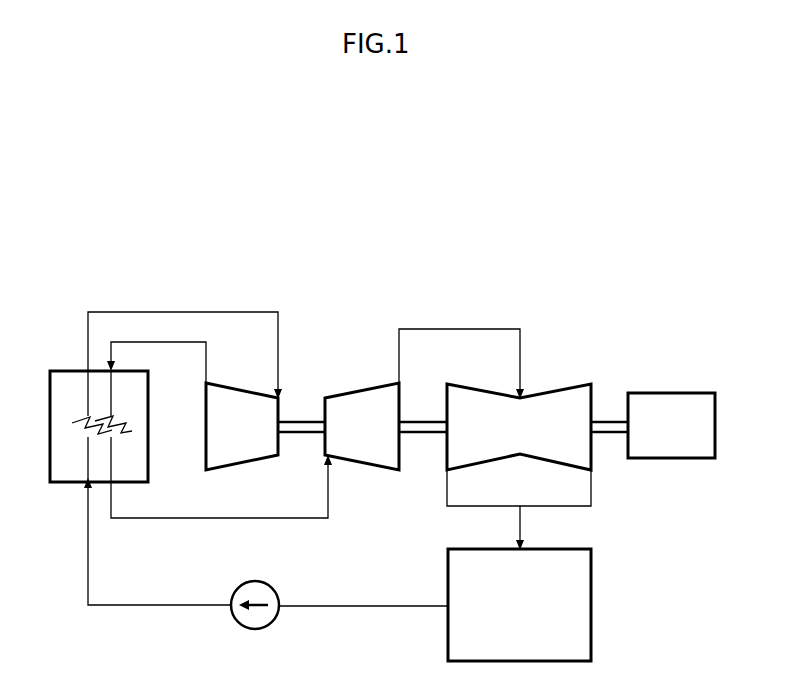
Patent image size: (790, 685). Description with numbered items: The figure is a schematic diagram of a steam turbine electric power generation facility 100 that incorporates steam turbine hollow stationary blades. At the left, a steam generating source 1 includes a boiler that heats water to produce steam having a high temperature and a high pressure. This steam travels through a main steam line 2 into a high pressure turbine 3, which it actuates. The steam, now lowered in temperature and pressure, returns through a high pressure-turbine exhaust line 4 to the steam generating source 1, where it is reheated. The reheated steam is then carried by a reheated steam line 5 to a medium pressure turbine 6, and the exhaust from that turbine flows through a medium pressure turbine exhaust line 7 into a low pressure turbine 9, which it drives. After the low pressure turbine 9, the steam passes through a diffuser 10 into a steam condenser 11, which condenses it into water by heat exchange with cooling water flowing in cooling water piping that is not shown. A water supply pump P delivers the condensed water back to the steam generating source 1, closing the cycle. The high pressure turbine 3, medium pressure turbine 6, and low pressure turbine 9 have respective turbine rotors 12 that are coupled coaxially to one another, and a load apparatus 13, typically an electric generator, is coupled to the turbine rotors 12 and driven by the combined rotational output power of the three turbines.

The steam turbine electric power generation facility 100 is at (377, 268).
The steam generating source 1 is at (50, 430).
The main steam line 2 is at (192, 312).
The high pressure turbine 3 is at (248, 390).
The high pressure-turbine exhaust line 4 is at (163, 344).
The reheated steam line 5 is at (210, 518).
The medium pressure turbine 6 is at (361, 390).
The medium pressure turbine exhaust line 7 is at (453, 329).
The low pressure turbine 9 is at (551, 391).
The diffuser 10 is at (470, 506).
The steam condenser 11 is at (591, 606).
The turbine rotors 12 is at (301, 432).
The load apparatus 13 is at (677, 393).
The water supply pump P is at (255, 629).